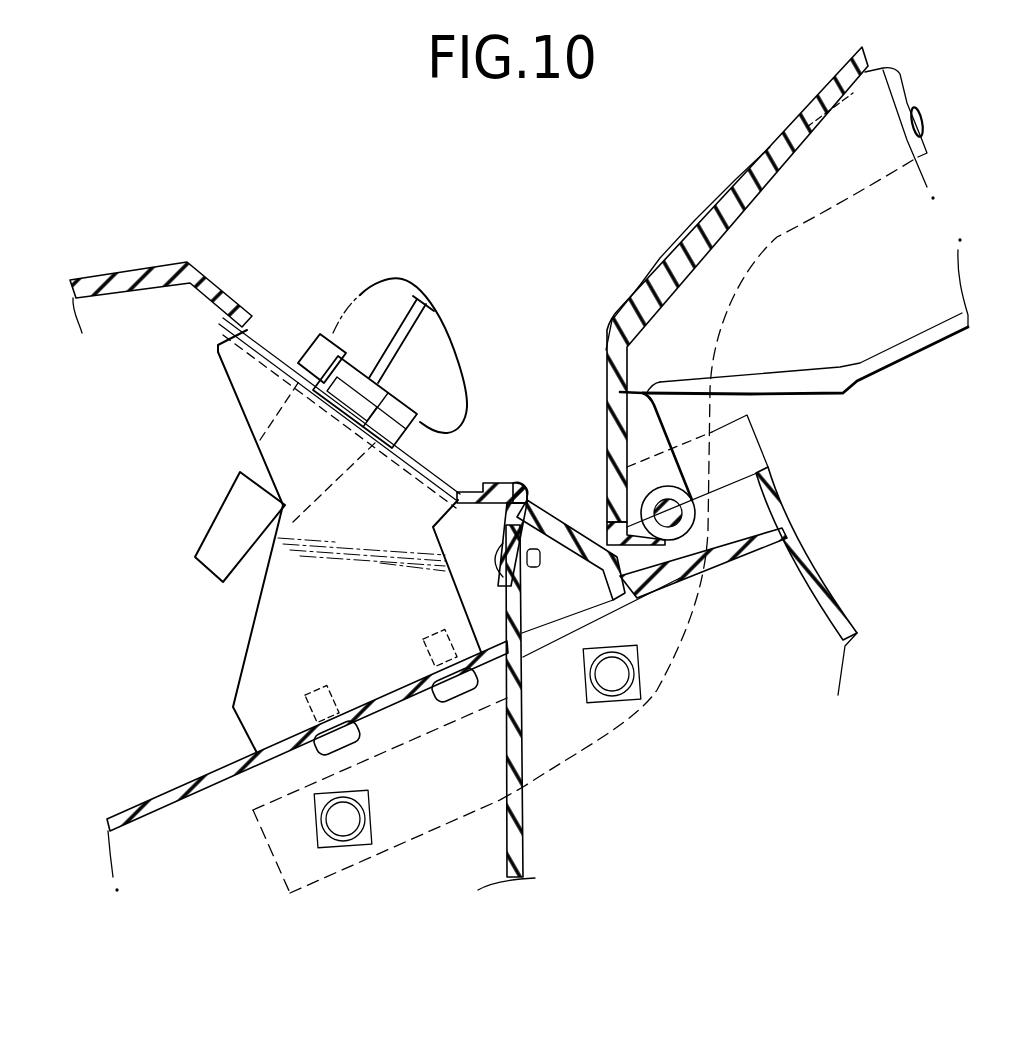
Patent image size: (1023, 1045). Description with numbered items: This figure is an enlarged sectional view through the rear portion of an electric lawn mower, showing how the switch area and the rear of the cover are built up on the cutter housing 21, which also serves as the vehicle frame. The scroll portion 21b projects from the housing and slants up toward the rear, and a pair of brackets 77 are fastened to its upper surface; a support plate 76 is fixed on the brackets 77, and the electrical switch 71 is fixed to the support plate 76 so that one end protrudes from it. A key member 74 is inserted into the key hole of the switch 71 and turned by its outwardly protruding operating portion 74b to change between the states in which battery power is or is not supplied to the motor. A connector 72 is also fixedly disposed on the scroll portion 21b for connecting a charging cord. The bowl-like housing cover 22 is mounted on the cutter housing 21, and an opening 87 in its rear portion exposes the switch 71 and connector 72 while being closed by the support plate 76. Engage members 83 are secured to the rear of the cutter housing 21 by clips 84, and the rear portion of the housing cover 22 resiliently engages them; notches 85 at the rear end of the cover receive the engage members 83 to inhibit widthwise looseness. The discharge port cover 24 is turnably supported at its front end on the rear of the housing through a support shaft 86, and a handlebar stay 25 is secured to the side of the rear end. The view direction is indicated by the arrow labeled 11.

The seat mounting structure 11 is at (540, 202).
The cutter housing 21 is at (840, 555).
The scroll portion 21b is at (205, 783).
The housing cover 22 is at (157, 278).
The discharge port cover 24 is at (770, 157).
The handlebar stay 25 is at (900, 125).
The electrical switch 71 is at (313, 343).
The connector 72 is at (392, 394).
The key member 74 is at (404, 301).
The operating portion 74b is at (405, 330).
The support plate 76 is at (440, 470).
The bracket 77 is at (265, 633).
The engage member 83 is at (524, 482).
The clip 84 is at (515, 556).
The notch 85 is at (523, 493).
The support shaft 86 is at (700, 485).
The opening 87 is at (268, 328).